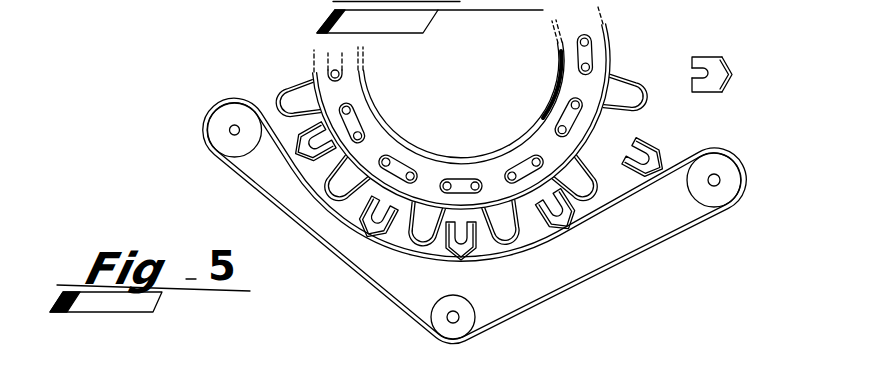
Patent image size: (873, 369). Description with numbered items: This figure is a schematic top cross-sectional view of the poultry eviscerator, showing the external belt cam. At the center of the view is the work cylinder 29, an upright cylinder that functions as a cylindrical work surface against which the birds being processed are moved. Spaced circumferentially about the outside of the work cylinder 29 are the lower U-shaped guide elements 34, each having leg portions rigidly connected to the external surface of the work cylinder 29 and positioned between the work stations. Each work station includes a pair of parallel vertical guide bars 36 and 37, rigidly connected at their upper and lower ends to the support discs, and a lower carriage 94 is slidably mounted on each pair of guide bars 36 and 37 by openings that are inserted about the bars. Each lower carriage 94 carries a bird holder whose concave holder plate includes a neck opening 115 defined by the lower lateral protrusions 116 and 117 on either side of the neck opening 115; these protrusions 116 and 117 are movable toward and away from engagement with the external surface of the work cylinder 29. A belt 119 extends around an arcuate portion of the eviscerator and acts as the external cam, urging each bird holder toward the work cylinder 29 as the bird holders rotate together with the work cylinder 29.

The work cylinder 29 is at (594, 132).
The lower U-shaped guide elements 34 is at (290, 86).
The vertical guide bar 36 is at (446, 182).
The vertical guide bar 37 is at (475, 182).
The lower carriage 94 is at (355, 122).
The neck opening 115 is at (693, 74).
The lower lateral protrusion 116 is at (699, 92).
The lower lateral protrusion 117 is at (700, 57).
The belt 119 is at (628, 258).